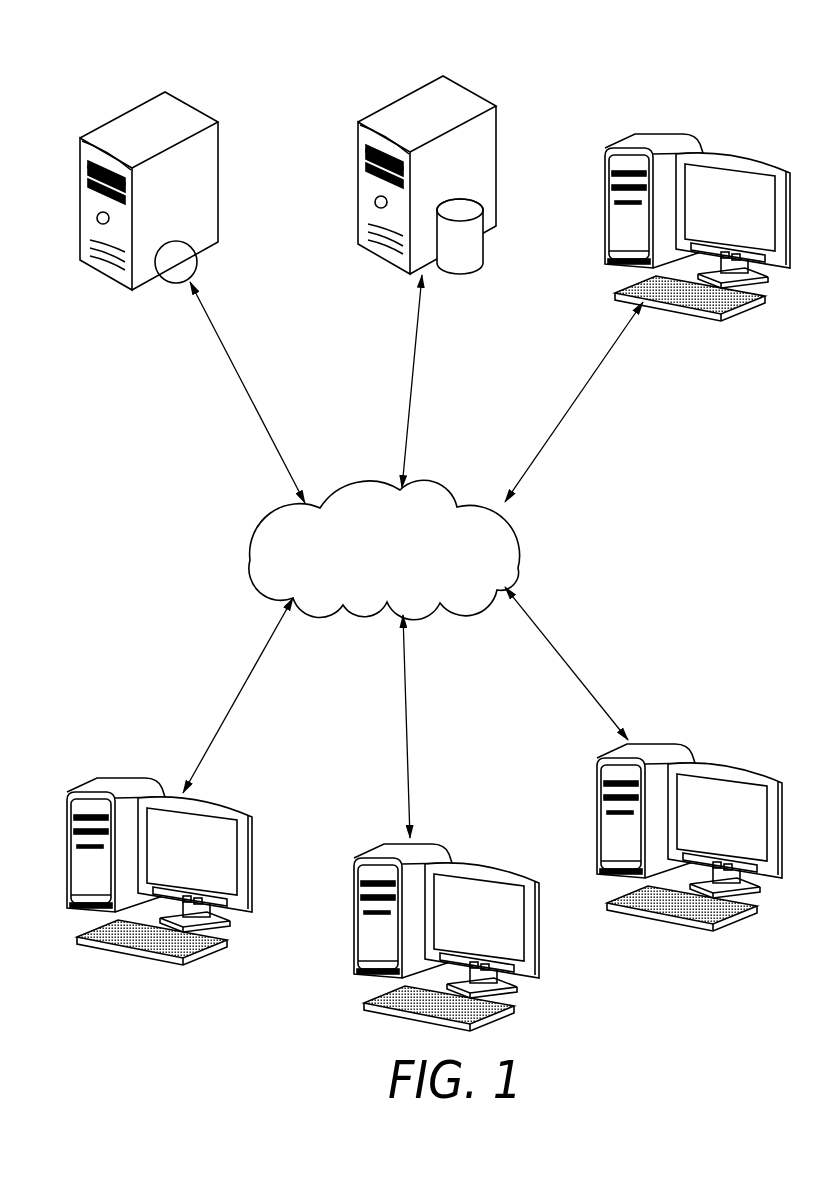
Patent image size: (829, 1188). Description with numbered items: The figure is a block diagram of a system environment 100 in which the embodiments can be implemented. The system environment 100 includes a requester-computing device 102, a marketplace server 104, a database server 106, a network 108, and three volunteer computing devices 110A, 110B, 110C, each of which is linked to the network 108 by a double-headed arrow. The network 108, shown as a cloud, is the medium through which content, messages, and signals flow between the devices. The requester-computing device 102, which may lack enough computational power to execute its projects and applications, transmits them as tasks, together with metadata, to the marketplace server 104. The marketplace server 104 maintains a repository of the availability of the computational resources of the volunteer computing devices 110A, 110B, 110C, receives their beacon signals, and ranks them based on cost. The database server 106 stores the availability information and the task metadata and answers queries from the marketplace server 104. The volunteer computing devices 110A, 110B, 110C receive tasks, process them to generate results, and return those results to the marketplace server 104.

The system environment 100 is at (609, 48).
The requester-computing device 102 is at (685, 130).
The marketplace server 104 is at (130, 117).
The database server 106 is at (388, 107).
The network 108 is at (250, 558).
The volunteer computing device 110A is at (122, 770).
The volunteer computing device 110B is at (435, 842).
The volunteer computing device 110C is at (663, 738).